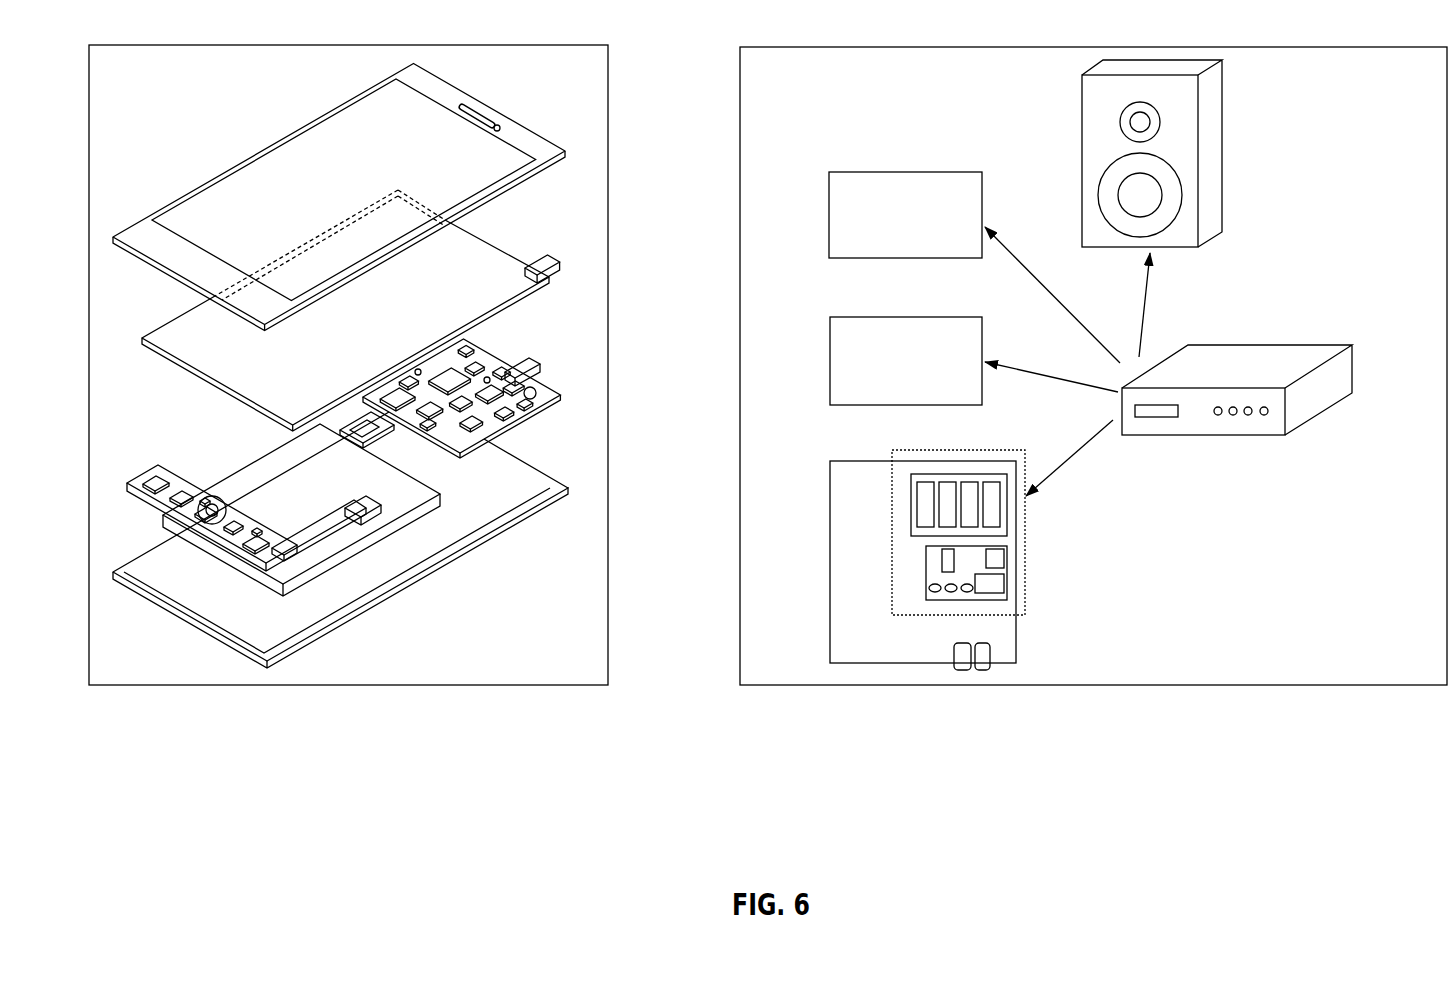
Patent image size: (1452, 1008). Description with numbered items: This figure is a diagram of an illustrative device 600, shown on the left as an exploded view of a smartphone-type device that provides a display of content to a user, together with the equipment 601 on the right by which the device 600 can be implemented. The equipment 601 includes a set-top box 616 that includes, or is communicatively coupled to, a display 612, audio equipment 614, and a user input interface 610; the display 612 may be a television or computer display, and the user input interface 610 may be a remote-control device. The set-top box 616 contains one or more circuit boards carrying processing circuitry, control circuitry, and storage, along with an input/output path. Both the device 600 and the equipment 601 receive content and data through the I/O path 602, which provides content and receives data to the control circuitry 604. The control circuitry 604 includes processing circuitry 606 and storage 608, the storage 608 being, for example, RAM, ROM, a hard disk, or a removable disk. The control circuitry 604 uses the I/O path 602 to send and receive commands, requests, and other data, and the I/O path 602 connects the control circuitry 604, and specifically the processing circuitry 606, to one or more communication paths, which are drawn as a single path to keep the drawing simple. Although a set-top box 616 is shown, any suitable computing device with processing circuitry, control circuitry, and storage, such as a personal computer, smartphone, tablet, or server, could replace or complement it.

The device 600 is at (185, 43).
The equipment 601 is at (1291, 44).
The I/O path 602 is at (197, 523).
The control circuitry 604 is at (890, 582).
The processing circuitry 606 is at (925, 553).
The storage 608 is at (909, 503).
The user input interface 610 is at (828, 213).
The display 612 is at (828, 326).
The audio equipment 614 is at (1080, 159).
The set-top box 616 is at (1228, 344).